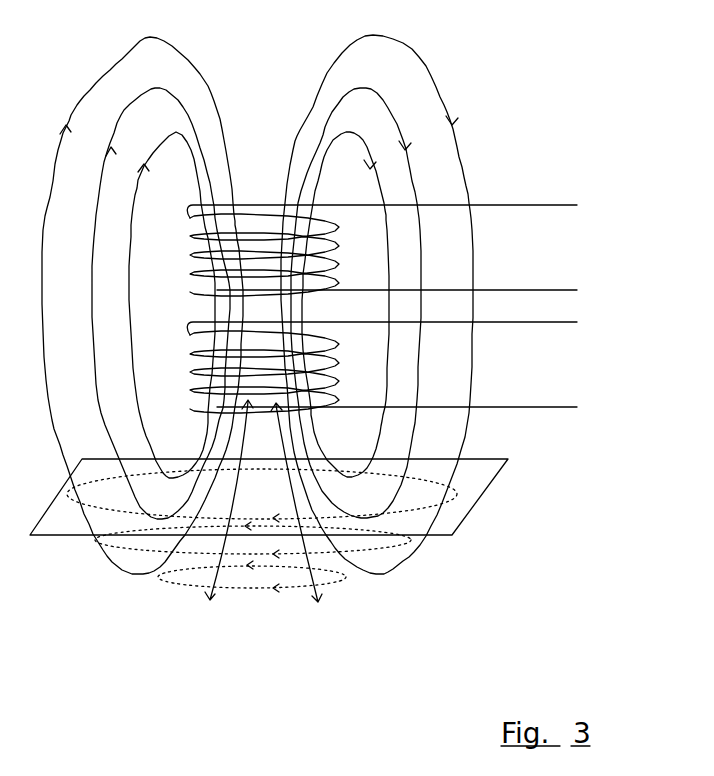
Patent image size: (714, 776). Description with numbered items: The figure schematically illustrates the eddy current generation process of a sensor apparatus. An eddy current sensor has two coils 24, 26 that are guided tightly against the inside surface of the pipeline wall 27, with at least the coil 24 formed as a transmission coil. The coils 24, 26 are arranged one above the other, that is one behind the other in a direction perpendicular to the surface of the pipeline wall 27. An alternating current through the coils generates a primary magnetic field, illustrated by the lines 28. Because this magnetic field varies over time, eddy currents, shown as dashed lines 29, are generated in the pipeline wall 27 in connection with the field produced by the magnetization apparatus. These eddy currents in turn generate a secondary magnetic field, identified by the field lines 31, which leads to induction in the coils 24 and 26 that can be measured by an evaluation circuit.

The coil 24 is at (528, 205).
The coil 26 is at (540, 407).
The pipeline wall 27 is at (462, 513).
The primary magnetic field lines 28 is at (208, 86).
The eddy currents 29 is at (440, 545).
The secondary magnetic field lines 31 is at (214, 599).